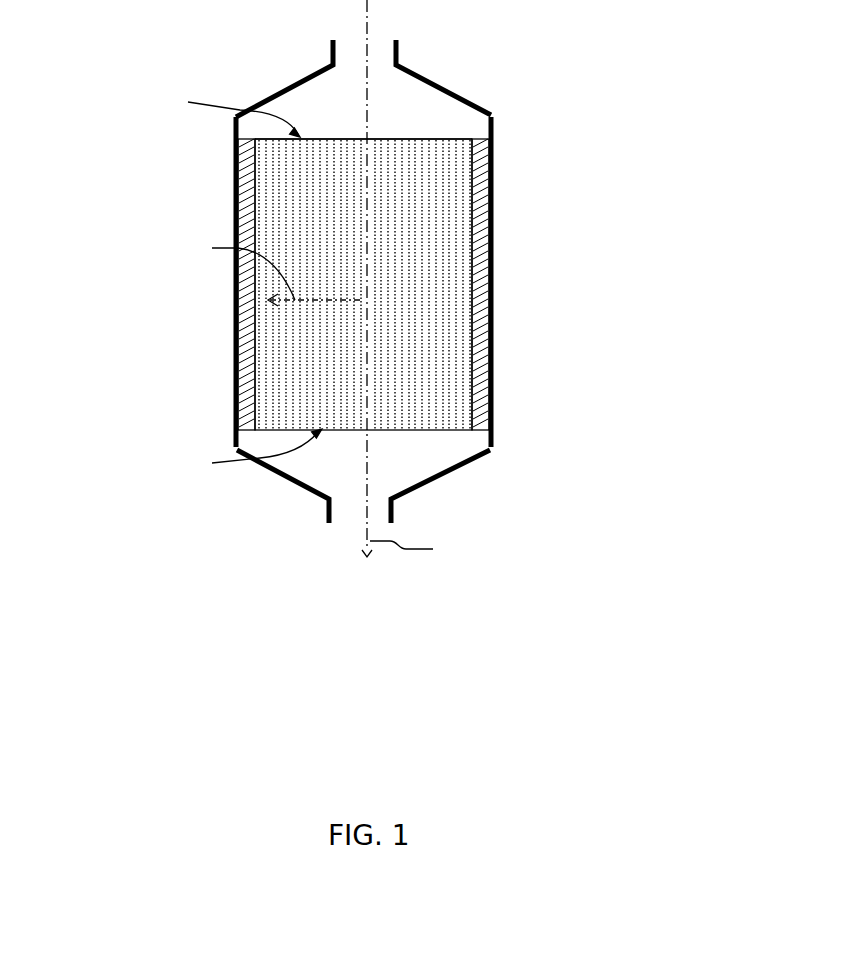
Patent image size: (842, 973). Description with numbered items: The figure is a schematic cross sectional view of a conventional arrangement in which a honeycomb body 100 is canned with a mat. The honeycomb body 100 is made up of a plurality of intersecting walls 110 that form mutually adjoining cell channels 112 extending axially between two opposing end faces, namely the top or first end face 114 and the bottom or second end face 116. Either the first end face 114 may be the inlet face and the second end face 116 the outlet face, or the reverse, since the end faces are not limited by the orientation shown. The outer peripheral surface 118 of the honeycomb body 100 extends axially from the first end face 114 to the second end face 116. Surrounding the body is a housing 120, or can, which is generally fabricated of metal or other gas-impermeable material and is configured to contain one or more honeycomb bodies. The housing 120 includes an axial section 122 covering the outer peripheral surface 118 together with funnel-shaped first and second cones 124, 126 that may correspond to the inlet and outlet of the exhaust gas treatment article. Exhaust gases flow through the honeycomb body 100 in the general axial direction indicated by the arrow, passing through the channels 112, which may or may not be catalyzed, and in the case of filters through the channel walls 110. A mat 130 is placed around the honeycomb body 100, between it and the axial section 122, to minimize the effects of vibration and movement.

The honeycomb body 100 is at (327, 278).
The intersecting walls 110 is at (272, 284).
The cell channels 112 is at (293, 177).
The first end face 114 is at (225, 113).
The second end face 116 is at (244, 451).
The outer peripheral surface 118 is at (409, 284).
The housing 120 is at (405, 277).
The axial section 122 is at (492, 225).
The first cone 124 is at (433, 82).
The second cone 126 is at (453, 468).
The mat 130 is at (476, 203).